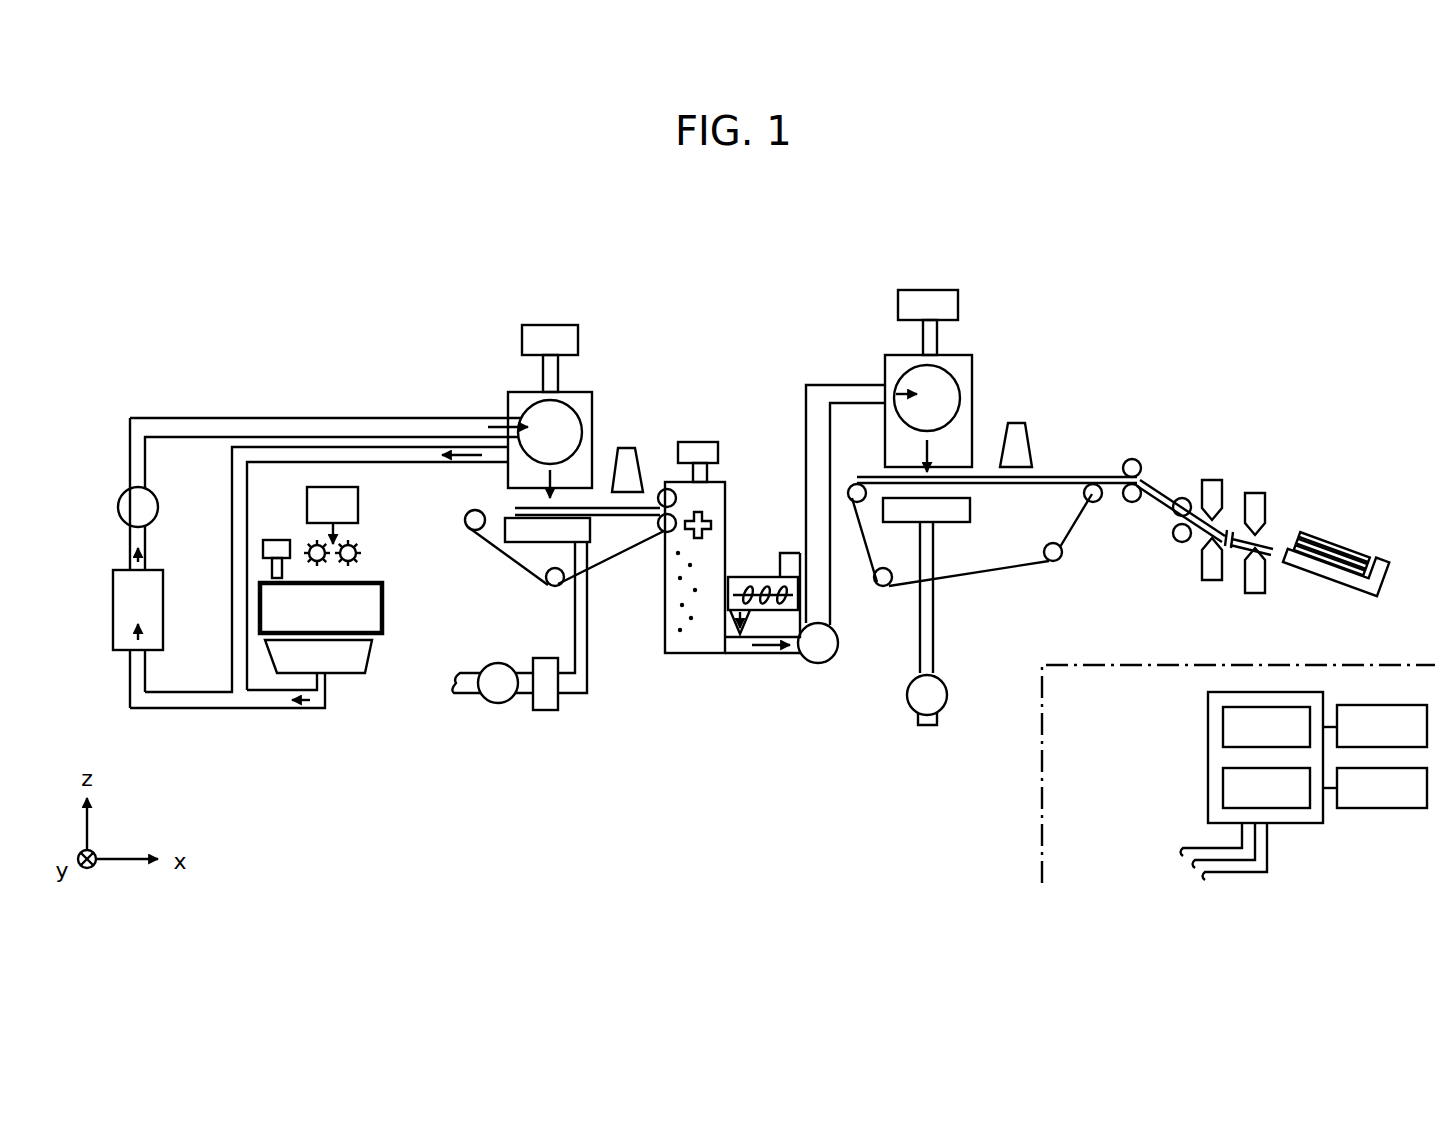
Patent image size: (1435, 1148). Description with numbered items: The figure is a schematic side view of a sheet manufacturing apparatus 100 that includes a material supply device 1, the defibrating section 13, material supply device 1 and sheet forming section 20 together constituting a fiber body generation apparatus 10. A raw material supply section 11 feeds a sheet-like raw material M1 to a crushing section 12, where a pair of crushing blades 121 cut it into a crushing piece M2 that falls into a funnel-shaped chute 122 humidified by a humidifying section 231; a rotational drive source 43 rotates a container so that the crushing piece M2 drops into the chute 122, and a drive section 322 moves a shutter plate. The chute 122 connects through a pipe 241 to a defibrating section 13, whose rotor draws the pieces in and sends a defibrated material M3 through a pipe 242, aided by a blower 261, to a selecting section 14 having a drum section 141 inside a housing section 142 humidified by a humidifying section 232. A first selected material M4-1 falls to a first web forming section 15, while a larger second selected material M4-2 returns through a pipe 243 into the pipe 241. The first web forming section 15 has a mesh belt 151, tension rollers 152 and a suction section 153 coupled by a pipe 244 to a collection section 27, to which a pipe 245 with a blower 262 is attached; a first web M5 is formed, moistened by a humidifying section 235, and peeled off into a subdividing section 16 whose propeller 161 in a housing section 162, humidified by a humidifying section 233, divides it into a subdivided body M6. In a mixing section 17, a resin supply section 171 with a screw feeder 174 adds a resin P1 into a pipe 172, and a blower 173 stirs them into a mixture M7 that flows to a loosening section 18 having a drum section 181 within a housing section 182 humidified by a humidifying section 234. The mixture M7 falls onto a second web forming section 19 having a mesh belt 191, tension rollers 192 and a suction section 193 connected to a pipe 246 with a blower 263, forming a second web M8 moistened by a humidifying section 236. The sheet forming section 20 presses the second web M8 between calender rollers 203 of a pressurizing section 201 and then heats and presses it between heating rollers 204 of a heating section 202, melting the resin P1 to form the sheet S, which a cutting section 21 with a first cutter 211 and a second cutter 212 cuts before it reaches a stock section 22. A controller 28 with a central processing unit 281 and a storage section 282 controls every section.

The fiber body generation apparatus 10 is at (455, 283).
The sheet manufacturing apparatus 100 is at (1128, 258).
The material supply device 1 is at (389, 606).
The raw material supply section 11 is at (308, 487).
The crushing section 12 is at (378, 562).
The crushing blades 121 is at (360, 565).
The chute 122 is at (365, 660).
The defibrating section 13 is at (113, 612).
The selecting section 14 is at (594, 418).
The drum section 141 is at (579, 412).
The housing section 142 is at (582, 392).
The first web forming section 15 is at (544, 569).
The mesh belt 151 is at (600, 568).
The tension rollers 152 is at (468, 513).
The suction section 153 is at (596, 528).
The subdividing section 16 is at (704, 597).
The propeller 161 is at (713, 525).
The housing section 162 is at (668, 655).
The mixing section 17 is at (807, 626).
The resin supply section 171 is at (781, 553).
The pipe 172 is at (839, 646).
The blower 173 is at (834, 658).
The screw feeder 174 is at (745, 577).
The loosening section 18 is at (969, 388).
The drum section 181 is at (958, 386).
The housing section 182 is at (970, 355).
The second web forming section 19 is at (981, 547).
The mesh belt 191 is at (985, 566).
The tension rollers 192 is at (856, 484).
The suction section 193 is at (971, 512).
The sheet forming section 20 is at (1152, 508).
The pressurizing section 201 is at (1128, 445).
The heating section 202 is at (1146, 562).
The calender rollers 203 is at (1182, 428).
The heating rollers 204 is at (1195, 586).
The cutting section 21 is at (1265, 492).
The first cutter 211 is at (1229, 470).
The second cutter 212 is at (1228, 434).
The stock section 22 is at (1343, 590).
The humidifying section 231 is at (276, 540).
The humidifying section 232 is at (550, 325).
The humidifying section 233 is at (698, 442).
The humidifying section 234 is at (932, 290).
The humidifying section 235 is at (630, 448).
The humidifying section 236 is at (1018, 423).
The pipe 241 is at (278, 708).
The pipe 242 is at (165, 418).
The pipe 243 is at (345, 447).
The pipe 244 is at (590, 668).
The pipe 245 is at (525, 695).
The pipe 246 is at (934, 650).
The blower 261 is at (128, 492).
The blower 262 is at (490, 701).
The blower 263 is at (947, 693).
The collection section 27 is at (550, 712).
The controller 28 is at (1213, 786).
The central processing unit 281 is at (1223, 731).
The storage section 282 is at (1230, 788).
The drive section 322 is at (1374, 705).
The rotational drive source 43 is at (1370, 808).
The raw material M1 is at (340, 531).
The crushing piece M2 is at (130, 655).
The defibrated material M3 is at (127, 558).
The first selected material M4-1 is at (541, 484).
The second selected material M4-2 is at (462, 450).
The first web M5 is at (660, 505).
The subdivided body M6 is at (700, 572).
The mixture M7 is at (770, 648).
The second web M8 is at (990, 476).
The resin P1 is at (748, 620).
The sheet S is at (1178, 505).